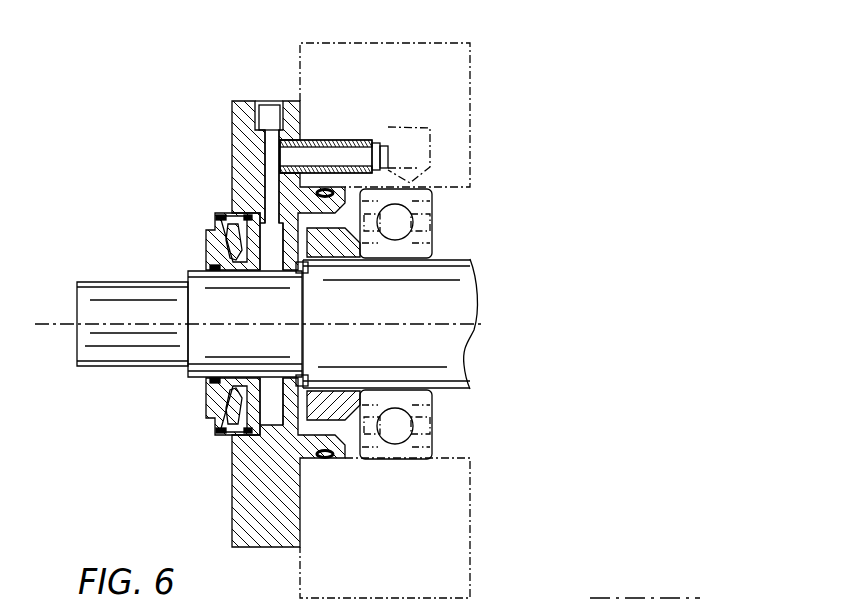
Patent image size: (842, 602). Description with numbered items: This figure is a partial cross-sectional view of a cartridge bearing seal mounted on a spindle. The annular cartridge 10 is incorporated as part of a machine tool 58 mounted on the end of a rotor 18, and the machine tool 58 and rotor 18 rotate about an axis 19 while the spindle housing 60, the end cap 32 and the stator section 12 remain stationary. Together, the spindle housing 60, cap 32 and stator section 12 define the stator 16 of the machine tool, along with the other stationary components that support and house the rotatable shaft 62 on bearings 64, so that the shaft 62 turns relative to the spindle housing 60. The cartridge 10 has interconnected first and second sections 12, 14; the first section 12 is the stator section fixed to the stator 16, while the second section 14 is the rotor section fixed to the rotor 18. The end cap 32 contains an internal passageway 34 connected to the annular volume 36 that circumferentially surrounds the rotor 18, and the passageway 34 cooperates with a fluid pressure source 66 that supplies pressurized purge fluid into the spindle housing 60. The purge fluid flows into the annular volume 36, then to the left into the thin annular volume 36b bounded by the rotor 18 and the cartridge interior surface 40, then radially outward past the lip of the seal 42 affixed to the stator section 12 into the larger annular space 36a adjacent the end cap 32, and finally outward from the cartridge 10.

The annular cartridge 10 is at (258, 304).
The first section 12 is at (238, 187).
The second section 14 is at (198, 310).
The stator 16 is at (230, 123).
The rotor 18 is at (238, 345).
The axis 19 is at (131, 340).
The end cap 32 is at (239, 100).
The internal passageway 34 is at (272, 165).
The internal annular volume 36 is at (303, 273).
The relatively large volume 36a is at (215, 214).
The relatively thin annular volume 36b is at (246, 270).
The interior surface 40 is at (273, 247).
The seal 42 is at (246, 258).
The machine tool 58 is at (42, 350).
The spindle housing 60 is at (472, 70).
The shaft 62 is at (453, 260).
The bearings 64 is at (433, 213).
The fluid pressure source 66 is at (378, 157).